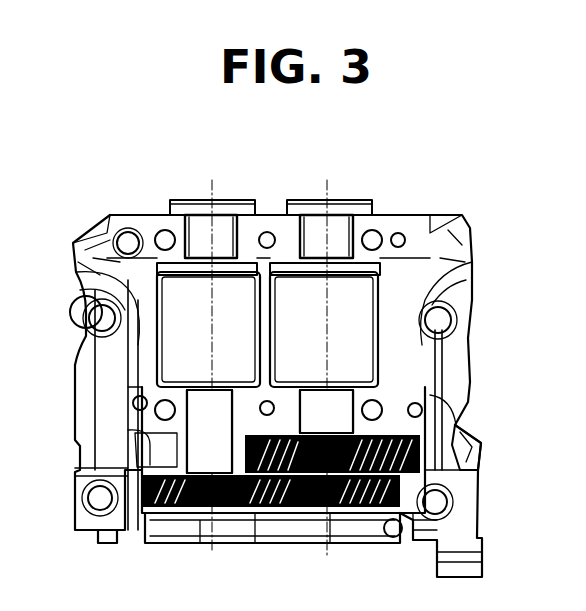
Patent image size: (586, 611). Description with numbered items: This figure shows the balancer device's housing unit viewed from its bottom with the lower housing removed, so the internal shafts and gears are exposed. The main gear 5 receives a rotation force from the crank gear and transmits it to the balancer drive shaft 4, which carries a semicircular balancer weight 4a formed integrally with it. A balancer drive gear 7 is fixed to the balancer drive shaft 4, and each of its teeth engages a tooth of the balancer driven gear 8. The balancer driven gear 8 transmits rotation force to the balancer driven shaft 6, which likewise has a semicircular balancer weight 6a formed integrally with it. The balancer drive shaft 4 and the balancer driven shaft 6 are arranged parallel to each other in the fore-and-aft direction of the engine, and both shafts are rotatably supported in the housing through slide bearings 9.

The balancer drive shaft 4 is at (337, 230).
The balancer weight 4a is at (453, 300).
The main gear 5 is at (420, 447).
The balancer driven shaft 6 is at (198, 230).
The balancer weight 6a is at (105, 320).
The balancer drive gear 7 is at (292, 523).
The balancer driven gear 8 is at (245, 508).
The slide bearings 9 is at (230, 217).